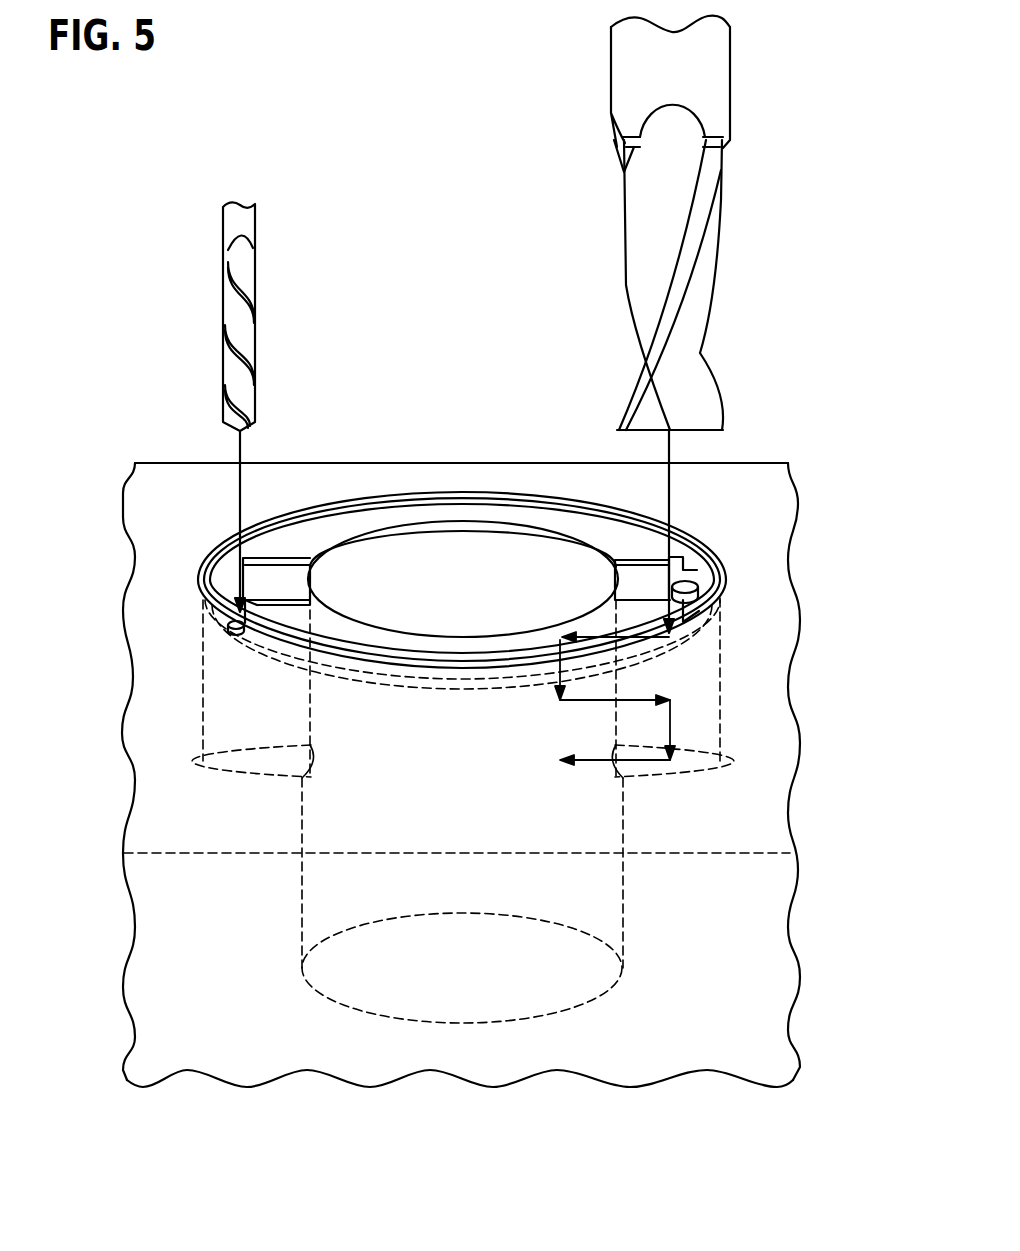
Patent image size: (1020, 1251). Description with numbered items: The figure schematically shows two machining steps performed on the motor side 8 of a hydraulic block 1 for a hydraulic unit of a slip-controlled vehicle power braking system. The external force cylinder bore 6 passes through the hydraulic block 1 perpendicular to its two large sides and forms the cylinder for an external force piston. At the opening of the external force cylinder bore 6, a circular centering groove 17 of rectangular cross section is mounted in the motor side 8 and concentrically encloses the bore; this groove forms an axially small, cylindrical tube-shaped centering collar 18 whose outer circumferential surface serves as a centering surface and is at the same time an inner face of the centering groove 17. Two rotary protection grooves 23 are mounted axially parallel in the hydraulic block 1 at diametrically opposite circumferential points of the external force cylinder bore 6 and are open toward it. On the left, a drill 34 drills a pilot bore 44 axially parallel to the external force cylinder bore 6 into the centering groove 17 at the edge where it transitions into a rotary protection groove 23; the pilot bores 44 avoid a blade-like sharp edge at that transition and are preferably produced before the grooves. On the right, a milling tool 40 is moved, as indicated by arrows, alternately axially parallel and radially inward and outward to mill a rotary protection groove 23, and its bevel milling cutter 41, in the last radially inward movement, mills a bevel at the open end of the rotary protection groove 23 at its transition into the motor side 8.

The hydraulic block 1 is at (757, 520).
The external force cylinder bore 6 is at (437, 578).
The motor side 8 is at (187, 503).
The centering groove 17 is at (227, 577).
The centering collar 18 is at (330, 540).
The rotary protection groove 23 is at (650, 580).
The drill 34 is at (237, 343).
The milling tool 40 is at (695, 310).
The bevel milling cutter 41 is at (723, 143).
The pilot bore 44 is at (229, 627).